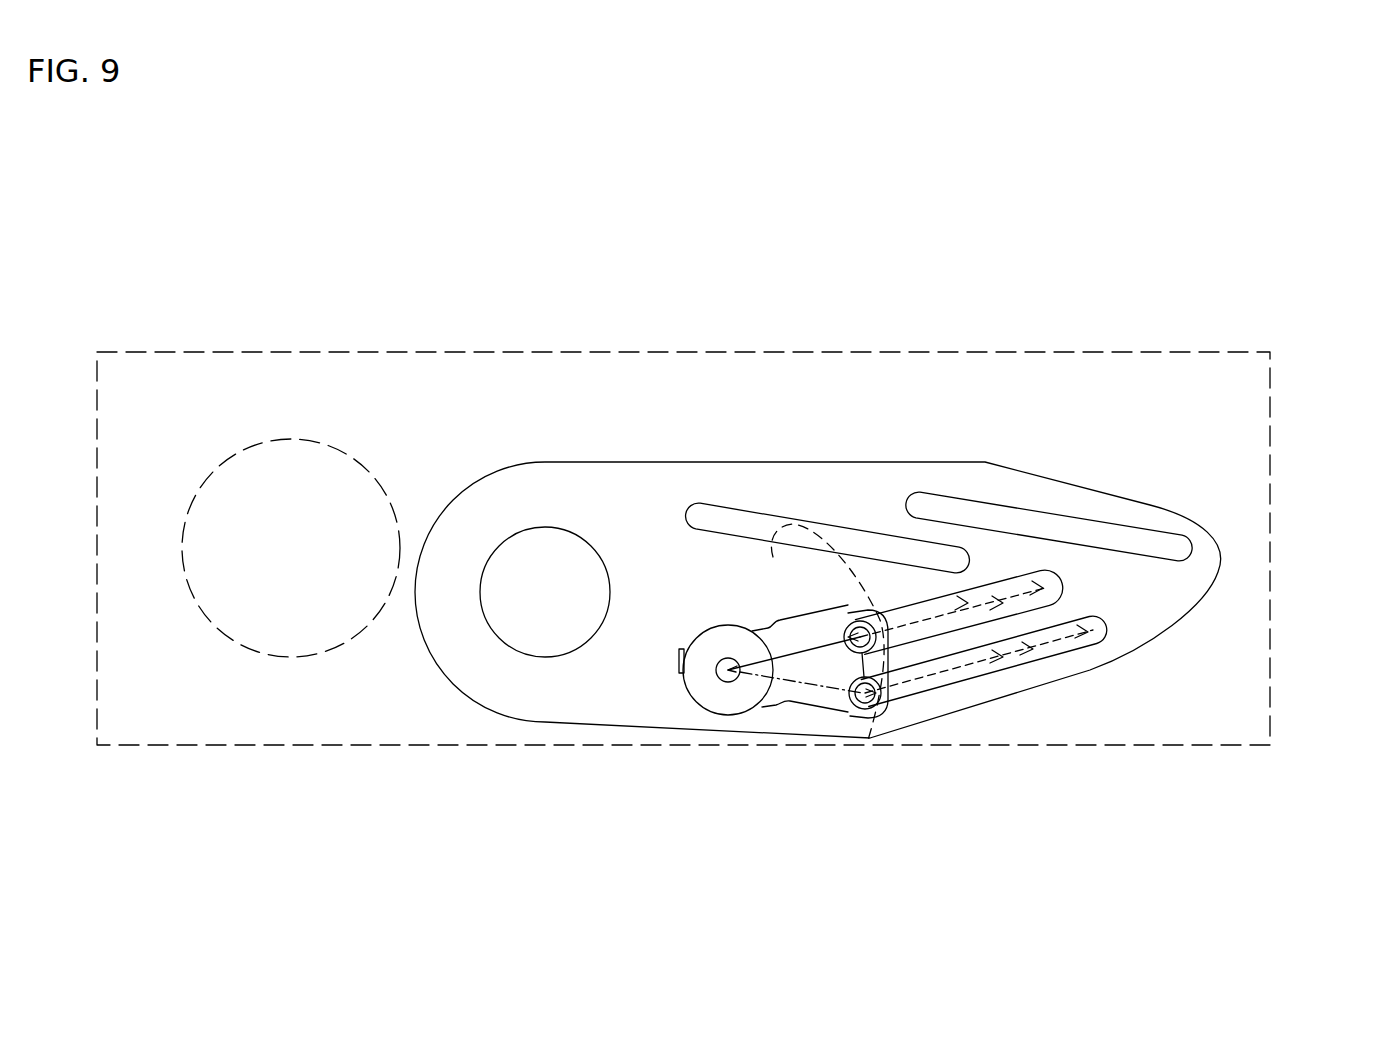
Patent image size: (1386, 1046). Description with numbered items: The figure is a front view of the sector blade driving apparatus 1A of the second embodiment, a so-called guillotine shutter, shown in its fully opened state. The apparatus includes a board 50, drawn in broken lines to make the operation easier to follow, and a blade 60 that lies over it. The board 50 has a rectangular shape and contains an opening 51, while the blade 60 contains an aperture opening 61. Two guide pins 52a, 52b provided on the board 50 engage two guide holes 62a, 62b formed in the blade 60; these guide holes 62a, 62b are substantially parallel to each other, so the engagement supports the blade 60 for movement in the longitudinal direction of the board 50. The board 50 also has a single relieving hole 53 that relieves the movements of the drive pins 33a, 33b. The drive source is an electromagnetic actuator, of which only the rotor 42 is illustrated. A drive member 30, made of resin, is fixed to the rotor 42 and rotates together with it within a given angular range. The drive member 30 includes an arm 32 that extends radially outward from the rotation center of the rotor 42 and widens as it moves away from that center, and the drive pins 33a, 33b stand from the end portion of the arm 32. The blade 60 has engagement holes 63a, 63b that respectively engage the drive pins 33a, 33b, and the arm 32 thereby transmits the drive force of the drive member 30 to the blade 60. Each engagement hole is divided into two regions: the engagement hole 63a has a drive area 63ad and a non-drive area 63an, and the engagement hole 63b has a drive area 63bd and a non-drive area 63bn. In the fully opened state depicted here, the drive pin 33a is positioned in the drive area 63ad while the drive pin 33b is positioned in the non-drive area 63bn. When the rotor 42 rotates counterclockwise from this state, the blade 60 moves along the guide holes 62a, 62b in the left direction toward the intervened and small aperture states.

The sector blade driving apparatus 1A is at (145, 297).
The board 50 is at (420, 347).
The opening 51 is at (295, 465).
The guide pin 52a is at (918, 505).
The guide pin 52b is at (697, 505).
The relieving hole 53 is at (835, 625).
The blade 60 is at (816, 458).
The aperture opening 61 is at (538, 635).
The guide hole 62a is at (1050, 510).
The guide hole 62b is at (733, 510).
The engagement hole 63a is at (1057, 584).
The drive area 63ad is at (918, 605).
The non-drive area 63an is at (1035, 572).
The engagement hole 63b is at (1090, 640).
The non-drive area 63bn is at (950, 680).
The drive area 63bd is at (1040, 637).
The drive member 30 is at (767, 708).
The arm 32 is at (822, 700).
The drive pin 33a is at (889, 695).
The drive pin 33b is at (867, 712).
The rotor 42 is at (708, 706).